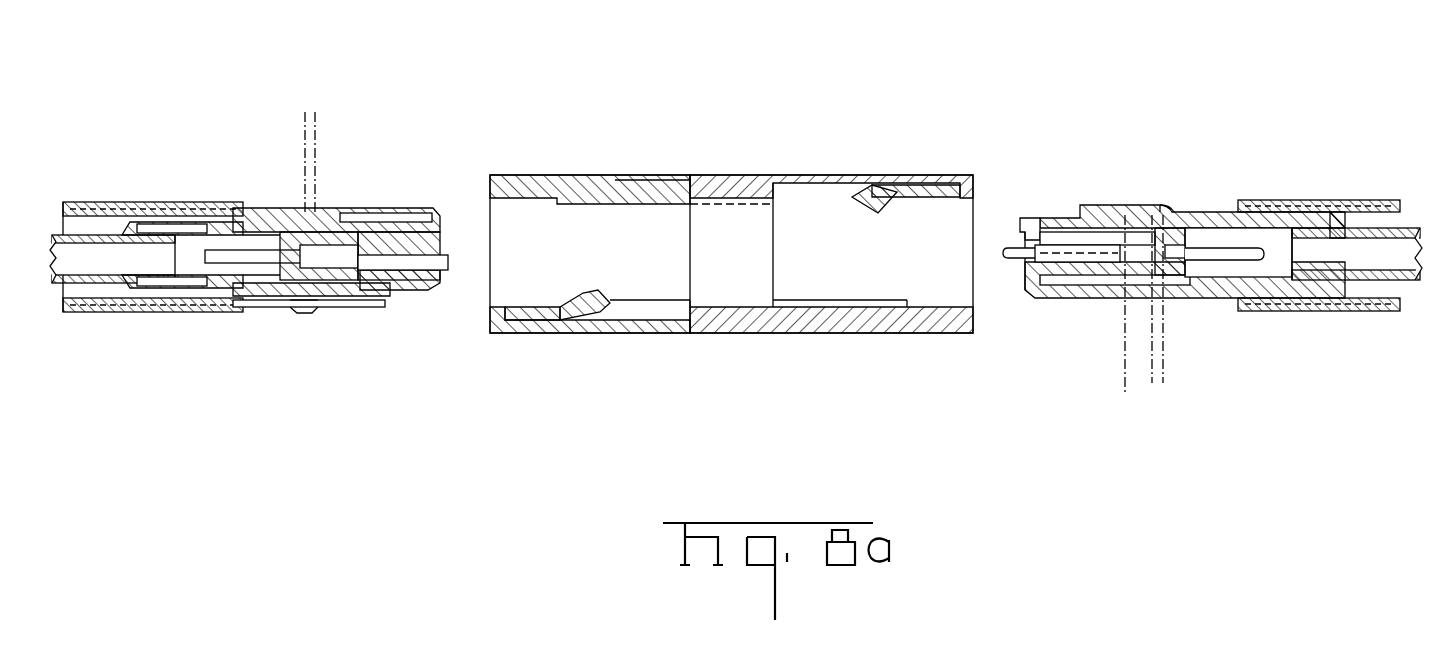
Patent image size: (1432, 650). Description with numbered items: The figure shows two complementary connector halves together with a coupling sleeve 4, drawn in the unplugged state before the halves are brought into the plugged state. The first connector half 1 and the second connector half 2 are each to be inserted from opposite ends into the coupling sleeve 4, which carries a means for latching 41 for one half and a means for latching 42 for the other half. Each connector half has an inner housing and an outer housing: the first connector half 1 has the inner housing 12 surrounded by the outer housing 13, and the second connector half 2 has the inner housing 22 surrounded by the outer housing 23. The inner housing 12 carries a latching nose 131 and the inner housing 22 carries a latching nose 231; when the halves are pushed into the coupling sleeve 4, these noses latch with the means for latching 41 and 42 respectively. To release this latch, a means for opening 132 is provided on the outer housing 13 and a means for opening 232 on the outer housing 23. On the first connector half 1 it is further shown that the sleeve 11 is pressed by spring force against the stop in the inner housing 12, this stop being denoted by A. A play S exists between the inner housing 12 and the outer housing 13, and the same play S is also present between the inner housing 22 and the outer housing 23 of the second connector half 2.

The first connector half 1 is at (1212, 214).
The sleeve 11 is at (1050, 284).
The inner housing 12 is at (1088, 205).
The outer housing 13 is at (1262, 205).
The latching nose 131 is at (1173, 207).
The means for opening 132 is at (1165, 206).
The second connector half 2 is at (249, 255).
The inner housing 22 is at (257, 300).
The outer housing 23 is at (187, 302).
The latching nose 231 is at (293, 313).
The means for opening 232 is at (303, 311).
The coupling sleeve 4 is at (731, 257).
The means for latching 41 is at (862, 200).
The means for latching 42 is at (588, 305).
The play S is at (273, 118).
The stop A is at (1088, 412).